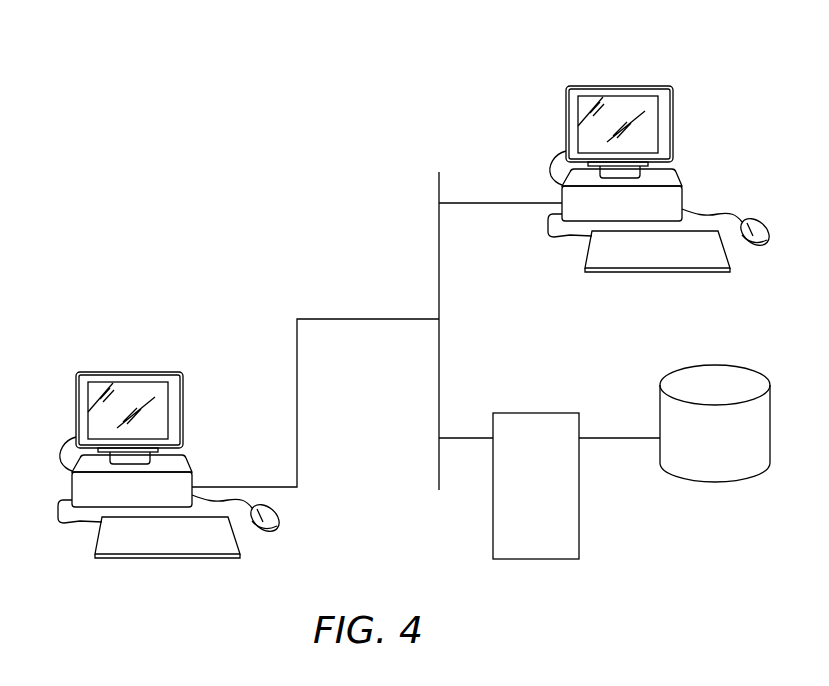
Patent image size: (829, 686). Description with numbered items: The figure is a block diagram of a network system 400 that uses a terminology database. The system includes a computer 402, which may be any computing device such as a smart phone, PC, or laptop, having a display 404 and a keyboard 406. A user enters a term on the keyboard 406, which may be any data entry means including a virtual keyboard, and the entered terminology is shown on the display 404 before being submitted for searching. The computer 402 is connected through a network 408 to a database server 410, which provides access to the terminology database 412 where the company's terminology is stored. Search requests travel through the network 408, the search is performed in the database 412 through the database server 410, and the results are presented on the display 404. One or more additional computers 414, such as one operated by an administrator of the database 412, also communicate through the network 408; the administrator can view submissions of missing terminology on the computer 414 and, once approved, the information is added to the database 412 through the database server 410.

The network system 400 is at (260, 220).
The computer 402 is at (83, 348).
The display 404 is at (183, 408).
The keyboard 406 is at (118, 558).
The network 408 is at (358, 318).
The database server 410 is at (551, 478).
The terminology database 412 is at (729, 449).
The computer 414 is at (663, 67).